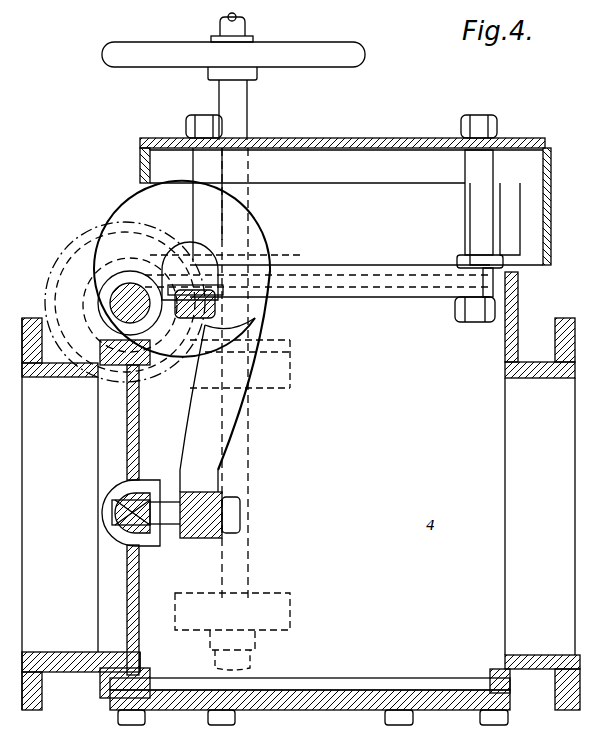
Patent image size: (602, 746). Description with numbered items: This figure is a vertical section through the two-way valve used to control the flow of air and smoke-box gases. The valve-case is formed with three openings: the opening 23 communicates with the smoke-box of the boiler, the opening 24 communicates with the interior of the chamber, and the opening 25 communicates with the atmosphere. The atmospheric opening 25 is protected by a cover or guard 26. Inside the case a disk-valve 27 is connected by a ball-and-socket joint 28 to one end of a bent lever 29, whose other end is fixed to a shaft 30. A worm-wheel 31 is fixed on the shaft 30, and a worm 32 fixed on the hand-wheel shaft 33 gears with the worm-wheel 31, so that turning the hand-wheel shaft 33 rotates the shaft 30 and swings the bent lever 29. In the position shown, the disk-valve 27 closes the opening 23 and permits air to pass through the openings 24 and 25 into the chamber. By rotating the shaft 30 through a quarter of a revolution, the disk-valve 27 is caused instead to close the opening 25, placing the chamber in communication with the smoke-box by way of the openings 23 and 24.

The opening 23 is at (86, 514).
The opening 24 is at (535, 491).
The opening 25 is at (320, 293).
The cover or guard 26 is at (372, 141).
The disk-valve 27 is at (127, 582).
The ball-and-socket joint 28 is at (152, 495).
The bent lever 29 is at (199, 452).
The shaft 30 is at (124, 306).
The worm-wheel 31 is at (86, 262).
The worm 32 is at (263, 245).
The hand-wheel shaft 33 is at (244, 118).